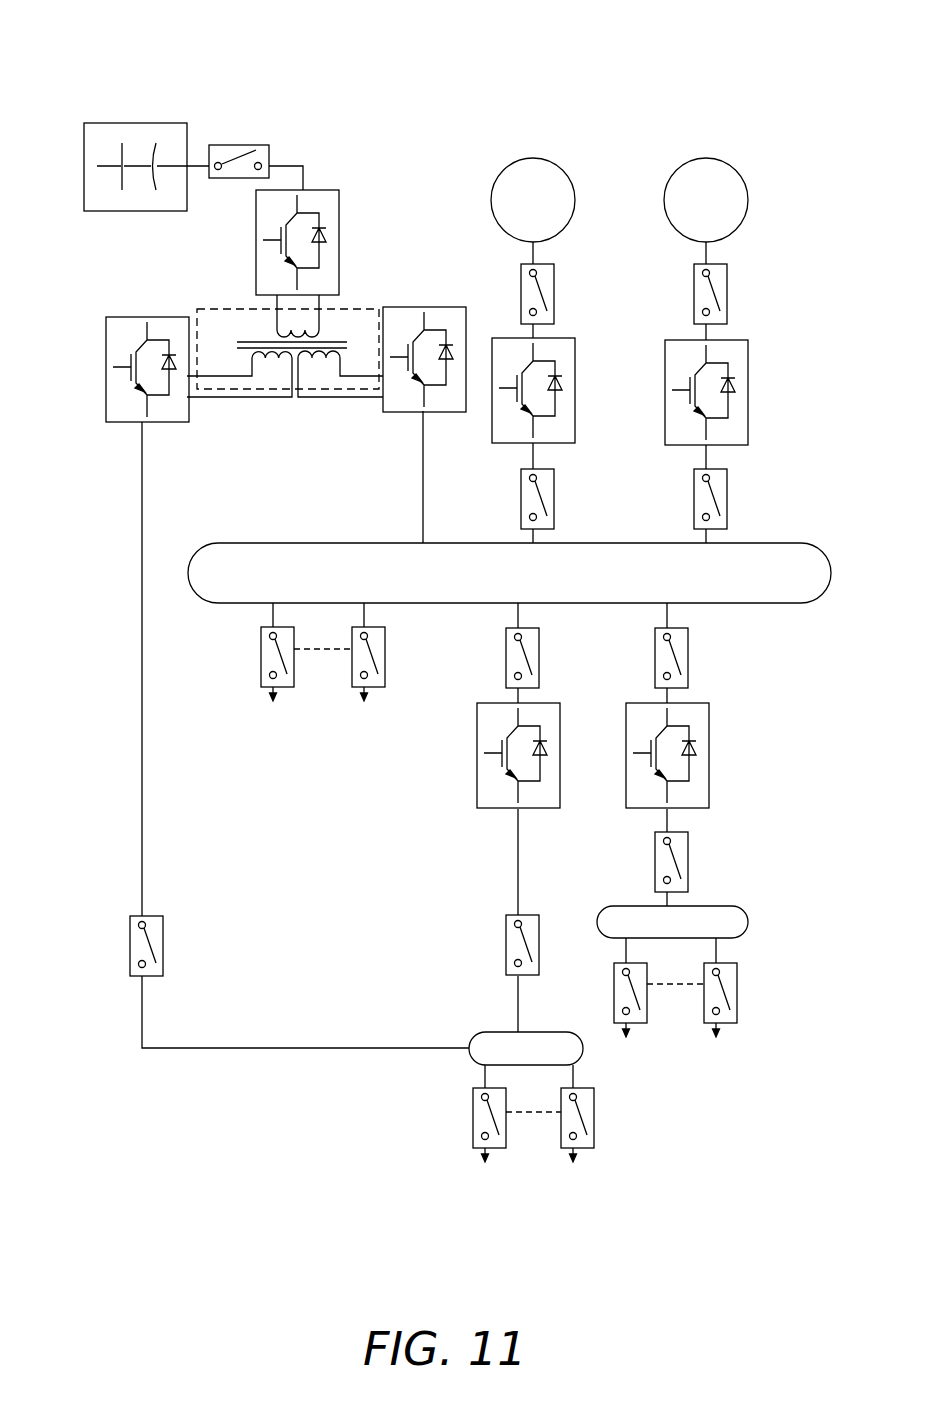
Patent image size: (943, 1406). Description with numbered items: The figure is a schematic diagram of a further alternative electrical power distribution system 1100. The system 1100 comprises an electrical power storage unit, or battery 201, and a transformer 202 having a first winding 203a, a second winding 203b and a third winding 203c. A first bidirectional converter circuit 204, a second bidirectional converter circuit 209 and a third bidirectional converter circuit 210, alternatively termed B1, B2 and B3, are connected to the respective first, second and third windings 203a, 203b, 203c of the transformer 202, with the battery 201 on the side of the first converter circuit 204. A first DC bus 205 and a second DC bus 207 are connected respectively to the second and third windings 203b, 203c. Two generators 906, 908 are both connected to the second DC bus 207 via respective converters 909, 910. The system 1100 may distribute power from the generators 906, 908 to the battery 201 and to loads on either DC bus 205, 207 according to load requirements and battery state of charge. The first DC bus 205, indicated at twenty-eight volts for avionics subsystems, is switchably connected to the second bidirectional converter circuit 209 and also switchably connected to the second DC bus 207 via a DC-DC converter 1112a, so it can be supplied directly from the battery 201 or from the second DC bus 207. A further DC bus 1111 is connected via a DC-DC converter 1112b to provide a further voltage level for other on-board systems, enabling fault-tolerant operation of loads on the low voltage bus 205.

The system 1100 is at (440, 581).
The battery 201 is at (104, 123).
The transformer 202 is at (291, 349).
The first winding 203a is at (312, 335).
The second winding 203b is at (256, 362).
The third winding 203c is at (335, 362).
The first bidirectional converter circuit 204 is at (325, 190).
The first DC bus 205 is at (492, 1032).
The second DC bus 207 is at (265, 543).
The second bidirectional converter circuit 209 is at (106, 345).
The third bidirectional converter circuit 210 is at (430, 307).
The generator 906 is at (575, 200).
The generator 908 is at (748, 200).
The converter 909 is at (576, 348).
The converter 910 is at (748, 362).
The further DC bus 1111 is at (720, 906).
The DC-DC converter 1112a is at (477, 756).
The DC-DC converter 1112b is at (710, 752).